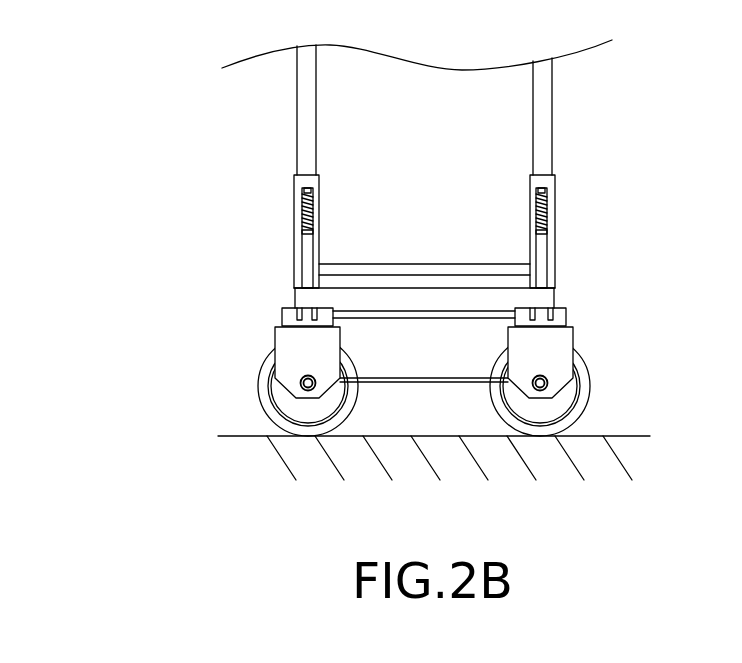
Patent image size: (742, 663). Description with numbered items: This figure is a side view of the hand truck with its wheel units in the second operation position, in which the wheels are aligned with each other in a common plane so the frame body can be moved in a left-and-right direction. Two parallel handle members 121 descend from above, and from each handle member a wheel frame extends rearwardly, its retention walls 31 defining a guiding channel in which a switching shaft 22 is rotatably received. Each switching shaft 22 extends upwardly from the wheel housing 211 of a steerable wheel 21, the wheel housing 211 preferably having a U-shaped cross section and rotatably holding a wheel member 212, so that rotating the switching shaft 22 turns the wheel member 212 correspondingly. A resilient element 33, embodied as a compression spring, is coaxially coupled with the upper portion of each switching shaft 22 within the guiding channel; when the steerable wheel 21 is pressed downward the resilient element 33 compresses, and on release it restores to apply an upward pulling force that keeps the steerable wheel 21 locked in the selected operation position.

The handle member 121 is at (305, 95).
The retention wall 31 is at (296, 181).
The resilient element 33 is at (318, 214).
The switching shaft 22 is at (305, 267).
The steerable wheel 21 is at (108, 335).
The wheel housing 211 is at (300, 345).
The wheel member 212 is at (267, 410).